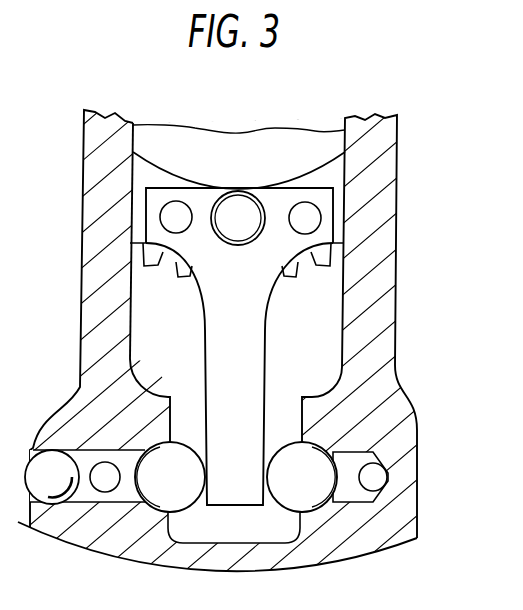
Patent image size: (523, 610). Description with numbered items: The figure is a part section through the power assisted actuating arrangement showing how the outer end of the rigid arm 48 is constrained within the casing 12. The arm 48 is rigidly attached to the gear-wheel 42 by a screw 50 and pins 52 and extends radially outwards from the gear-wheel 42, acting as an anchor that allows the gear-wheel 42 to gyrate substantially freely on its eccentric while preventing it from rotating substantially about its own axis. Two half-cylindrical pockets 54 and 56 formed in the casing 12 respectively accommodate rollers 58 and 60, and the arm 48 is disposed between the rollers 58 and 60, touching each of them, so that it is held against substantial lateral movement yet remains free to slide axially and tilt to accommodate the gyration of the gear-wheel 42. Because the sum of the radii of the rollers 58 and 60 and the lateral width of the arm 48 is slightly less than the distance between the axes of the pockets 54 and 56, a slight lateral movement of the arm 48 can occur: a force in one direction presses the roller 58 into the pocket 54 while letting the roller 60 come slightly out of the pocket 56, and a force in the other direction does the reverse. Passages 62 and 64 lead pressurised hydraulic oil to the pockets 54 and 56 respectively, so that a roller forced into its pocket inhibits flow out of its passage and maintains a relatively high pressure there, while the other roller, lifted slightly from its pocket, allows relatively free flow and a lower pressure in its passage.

The second casing 12 is at (372, 364).
The gear-wheel 42 is at (320, 262).
The rigid arm 48 is at (239, 346).
The screw 50 is at (247, 226).
The pins 52 is at (300, 208).
The half-cylindrical pocket 54 is at (137, 448).
The half-cylindrical pocket 56 is at (313, 443).
The roller 58 is at (170, 477).
The roller 60 is at (302, 477).
The passage 62 is at (103, 476).
The passage 64 is at (377, 478).